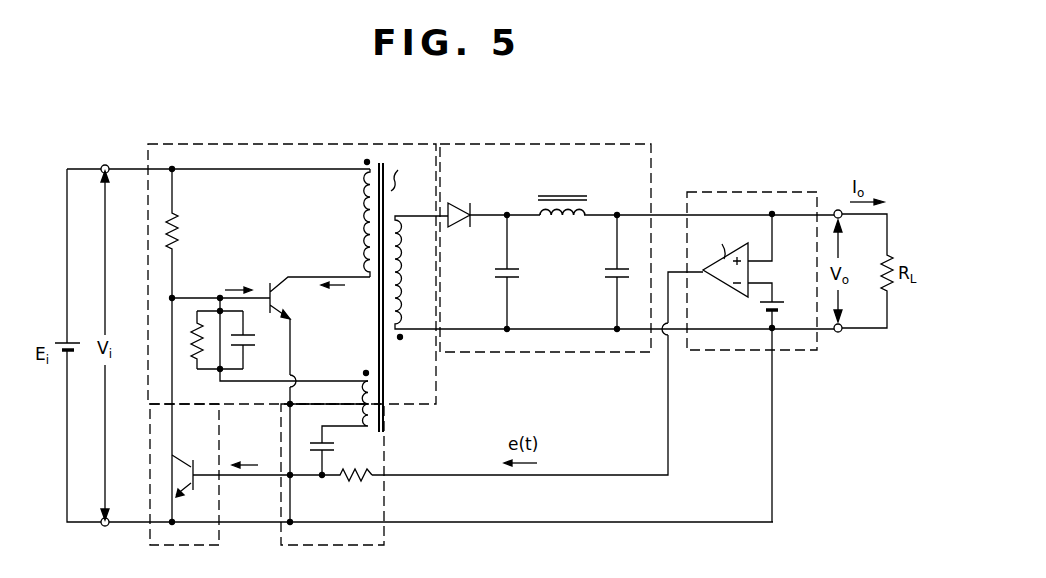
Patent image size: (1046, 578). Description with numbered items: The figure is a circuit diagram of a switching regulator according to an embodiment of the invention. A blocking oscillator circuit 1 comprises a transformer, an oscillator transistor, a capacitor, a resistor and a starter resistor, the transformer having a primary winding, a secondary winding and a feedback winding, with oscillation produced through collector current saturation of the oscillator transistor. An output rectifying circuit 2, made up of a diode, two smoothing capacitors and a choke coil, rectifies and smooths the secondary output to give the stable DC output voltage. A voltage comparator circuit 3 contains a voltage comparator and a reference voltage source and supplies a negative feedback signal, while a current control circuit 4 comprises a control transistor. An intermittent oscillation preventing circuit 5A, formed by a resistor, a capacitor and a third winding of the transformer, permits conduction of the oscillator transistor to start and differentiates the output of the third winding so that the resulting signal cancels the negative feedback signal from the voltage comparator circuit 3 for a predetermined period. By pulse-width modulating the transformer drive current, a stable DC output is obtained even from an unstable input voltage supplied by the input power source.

The blocking oscillator circuit 1 is at (275, 144).
The output rectifying circuit 2 is at (552, 144).
The voltage comparator circuit 3 is at (740, 192).
The current control circuit 4 is at (200, 545).
The intermittent oscillation preventing circuit 5A is at (365, 545).